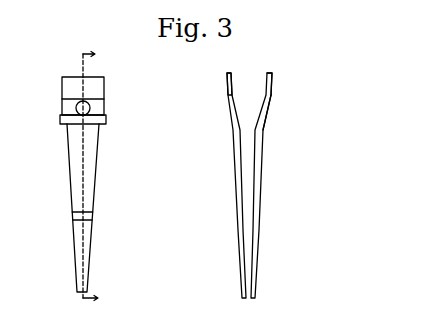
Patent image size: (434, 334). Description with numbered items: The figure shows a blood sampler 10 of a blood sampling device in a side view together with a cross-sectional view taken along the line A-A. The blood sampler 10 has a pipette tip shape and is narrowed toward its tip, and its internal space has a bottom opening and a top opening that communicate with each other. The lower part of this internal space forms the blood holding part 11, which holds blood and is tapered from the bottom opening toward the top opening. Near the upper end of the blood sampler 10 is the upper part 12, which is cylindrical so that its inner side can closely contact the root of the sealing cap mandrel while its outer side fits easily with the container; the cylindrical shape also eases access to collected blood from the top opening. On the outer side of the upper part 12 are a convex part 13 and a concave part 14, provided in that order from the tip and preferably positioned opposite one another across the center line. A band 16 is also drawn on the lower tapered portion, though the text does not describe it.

The blood sampler 10 is at (100, 191).
The blood holding part 11 is at (247, 245).
The upper part 12 is at (273, 78).
The convex part 13 is at (272, 102).
The concave part 14 is at (228, 97).
The marking band 16 is at (94, 215).